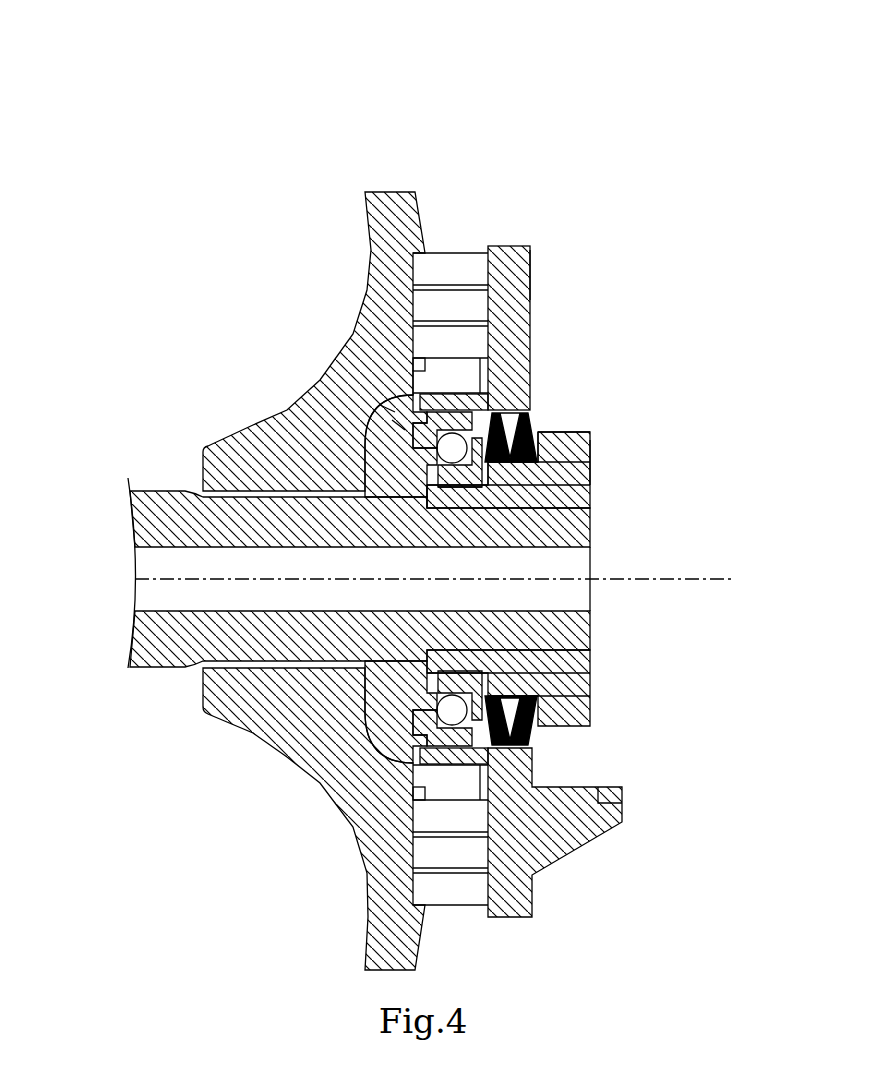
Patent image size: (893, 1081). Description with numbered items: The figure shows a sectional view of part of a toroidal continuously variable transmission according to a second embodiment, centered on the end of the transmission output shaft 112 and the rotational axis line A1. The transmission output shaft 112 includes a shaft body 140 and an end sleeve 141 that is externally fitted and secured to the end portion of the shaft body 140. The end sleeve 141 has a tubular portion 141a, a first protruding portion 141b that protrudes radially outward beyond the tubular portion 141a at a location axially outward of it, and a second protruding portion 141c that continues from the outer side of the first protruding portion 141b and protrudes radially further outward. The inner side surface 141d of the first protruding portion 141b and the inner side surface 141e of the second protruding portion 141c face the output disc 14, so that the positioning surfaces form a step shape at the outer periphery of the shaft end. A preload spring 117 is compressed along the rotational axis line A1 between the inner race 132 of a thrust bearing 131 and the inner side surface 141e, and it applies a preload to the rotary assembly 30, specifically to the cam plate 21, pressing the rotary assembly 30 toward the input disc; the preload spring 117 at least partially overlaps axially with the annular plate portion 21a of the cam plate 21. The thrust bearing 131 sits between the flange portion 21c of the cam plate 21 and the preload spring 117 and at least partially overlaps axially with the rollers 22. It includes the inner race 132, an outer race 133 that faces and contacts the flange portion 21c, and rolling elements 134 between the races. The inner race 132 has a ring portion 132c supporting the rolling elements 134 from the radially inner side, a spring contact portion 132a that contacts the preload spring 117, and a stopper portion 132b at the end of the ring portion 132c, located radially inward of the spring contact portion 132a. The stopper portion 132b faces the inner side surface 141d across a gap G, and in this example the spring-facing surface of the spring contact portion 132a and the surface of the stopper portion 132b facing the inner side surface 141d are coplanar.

The output disc 14 is at (381, 190).
The rollers 22 is at (457, 346).
The cam plate 21 is at (519, 245).
The annular plate portion 21a is at (532, 272).
The flange portion 21c is at (410, 390).
The rotary assembly 30 is at (352, 68).
The thrust bearing 131 is at (228, 265).
The inner race 132 is at (410, 455).
The outer race 133 is at (390, 405).
The rolling elements 134 is at (398, 425).
The spring contact portion 132a is at (478, 444).
The stopper portion 132b is at (485, 466).
The ring portion 132c is at (442, 486).
The preload spring 117 is at (530, 415).
The end sleeve 141 is at (590, 497).
The tubular portion 141a is at (428, 482).
The first protruding portion 141b is at (590, 457).
The second protruding portion 141c is at (552, 432).
The inner side surface 141d is at (590, 475).
The inner side surface 141e is at (540, 447).
The transmission output shaft 112 is at (157, 482).
The shaft body 140 is at (153, 522).
The gap G is at (489, 478).
The rotational axis line A1 is at (700, 582).